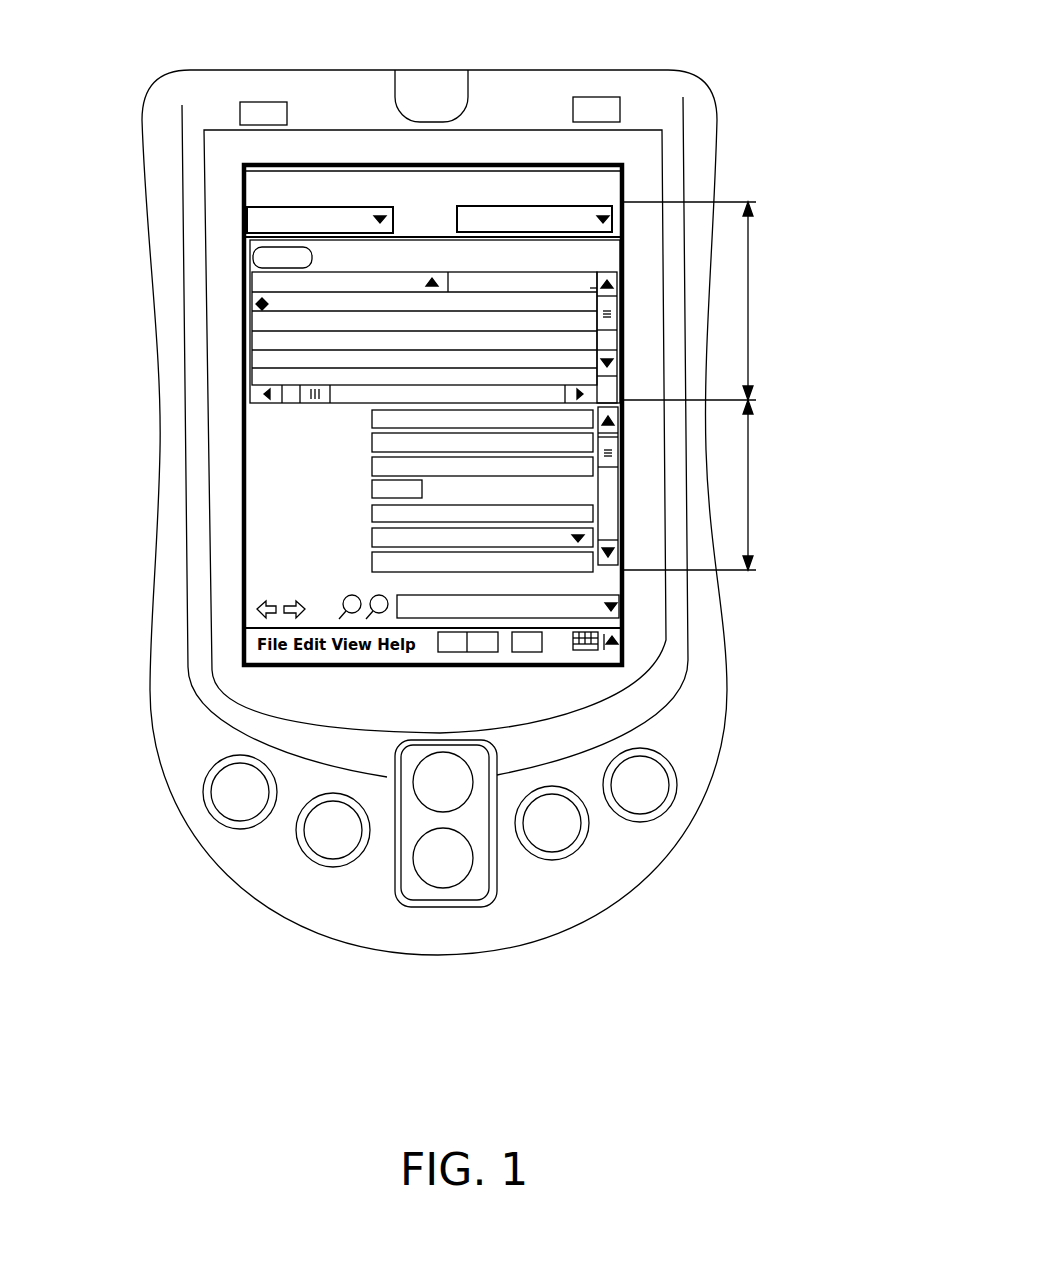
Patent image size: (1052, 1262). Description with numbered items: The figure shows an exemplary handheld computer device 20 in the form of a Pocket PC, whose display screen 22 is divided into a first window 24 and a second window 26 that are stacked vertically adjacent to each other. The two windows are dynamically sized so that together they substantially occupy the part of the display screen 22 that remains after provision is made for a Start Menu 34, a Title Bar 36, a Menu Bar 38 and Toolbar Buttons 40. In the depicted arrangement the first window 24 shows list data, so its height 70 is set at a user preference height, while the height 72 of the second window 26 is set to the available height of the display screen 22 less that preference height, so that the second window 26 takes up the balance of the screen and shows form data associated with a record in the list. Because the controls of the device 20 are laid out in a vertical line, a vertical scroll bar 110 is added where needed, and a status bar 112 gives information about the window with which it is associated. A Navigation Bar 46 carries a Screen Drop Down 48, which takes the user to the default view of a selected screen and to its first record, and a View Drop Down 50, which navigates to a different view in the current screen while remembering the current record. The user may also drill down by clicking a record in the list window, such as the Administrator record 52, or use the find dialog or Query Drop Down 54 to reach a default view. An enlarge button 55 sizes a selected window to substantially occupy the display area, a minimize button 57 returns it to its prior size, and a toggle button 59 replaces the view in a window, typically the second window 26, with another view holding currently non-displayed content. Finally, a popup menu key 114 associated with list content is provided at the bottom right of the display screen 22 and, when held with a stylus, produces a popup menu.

The handheld computer device 20 is at (740, 80).
The display screen 22 is at (481, 345).
The first window 24 is at (355, 323).
The second window 26 is at (456, 513).
The Start Menu 34 is at (255, 178).
The Title Bar 36 is at (478, 182).
The Menu Bar 38 is at (422, 657).
The Toolbar Buttons 40 is at (416, 344).
The Navigation Bar 46 is at (622, 215).
The Screen Drop Down 48 is at (245, 225).
The View Drop Down 50 is at (548, 218).
The Administrator record 52 is at (248, 308).
The Query Drop Down 54 is at (597, 603).
The enlarge button 55 is at (448, 653).
The minimize button 57 is at (477, 652).
The toggle button 59 is at (533, 652).
The height of the first window 70 is at (753, 283).
The height of the second window 72 is at (753, 486).
The vertical scroll bar 110 is at (620, 453).
The status bar 112 is at (580, 580).
The popup menu key 114 is at (593, 650).